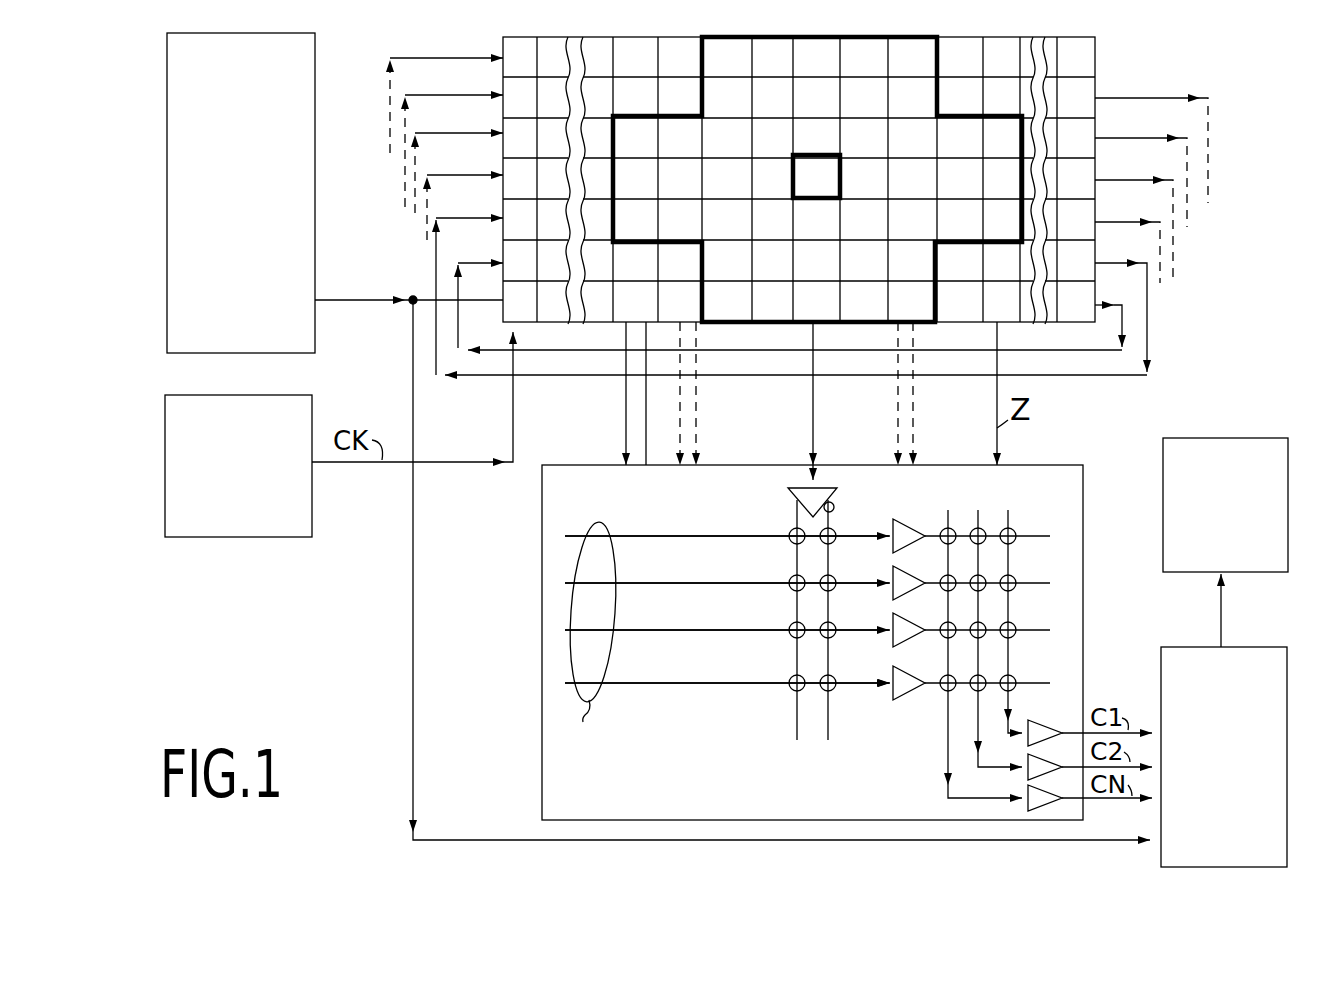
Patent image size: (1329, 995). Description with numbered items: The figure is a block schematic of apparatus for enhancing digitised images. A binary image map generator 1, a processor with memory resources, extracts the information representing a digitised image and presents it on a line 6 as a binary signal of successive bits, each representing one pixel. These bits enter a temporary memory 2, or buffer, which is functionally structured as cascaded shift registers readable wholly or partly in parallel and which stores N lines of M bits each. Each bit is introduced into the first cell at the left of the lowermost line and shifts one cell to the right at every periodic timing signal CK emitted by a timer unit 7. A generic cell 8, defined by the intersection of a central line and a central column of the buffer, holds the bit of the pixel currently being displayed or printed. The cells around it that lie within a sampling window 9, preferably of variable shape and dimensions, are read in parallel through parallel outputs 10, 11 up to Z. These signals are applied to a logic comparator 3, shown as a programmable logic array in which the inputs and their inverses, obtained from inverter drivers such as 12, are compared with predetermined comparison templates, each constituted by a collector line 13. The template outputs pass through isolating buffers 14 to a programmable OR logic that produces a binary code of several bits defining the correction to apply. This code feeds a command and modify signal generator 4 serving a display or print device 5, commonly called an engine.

The binary image map generator 1 is at (315, 185).
The temporary memory 2 is at (545, 37).
The logic comparator 3 is at (1083, 490).
The command and modify signal generator 4 is at (1288, 741).
The display or print device 5 is at (1248, 438).
The line 6 is at (345, 300).
The timer unit 7 is at (313, 500).
The generic cell 8 is at (843, 176).
The sampling window 9 is at (942, 56).
The parallel output 10 is at (624, 407).
The parallel output 11 is at (648, 418).
The inverter driver 12 is at (790, 498).
The collector line 13 is at (585, 712).
The buffer 14 is at (912, 522).